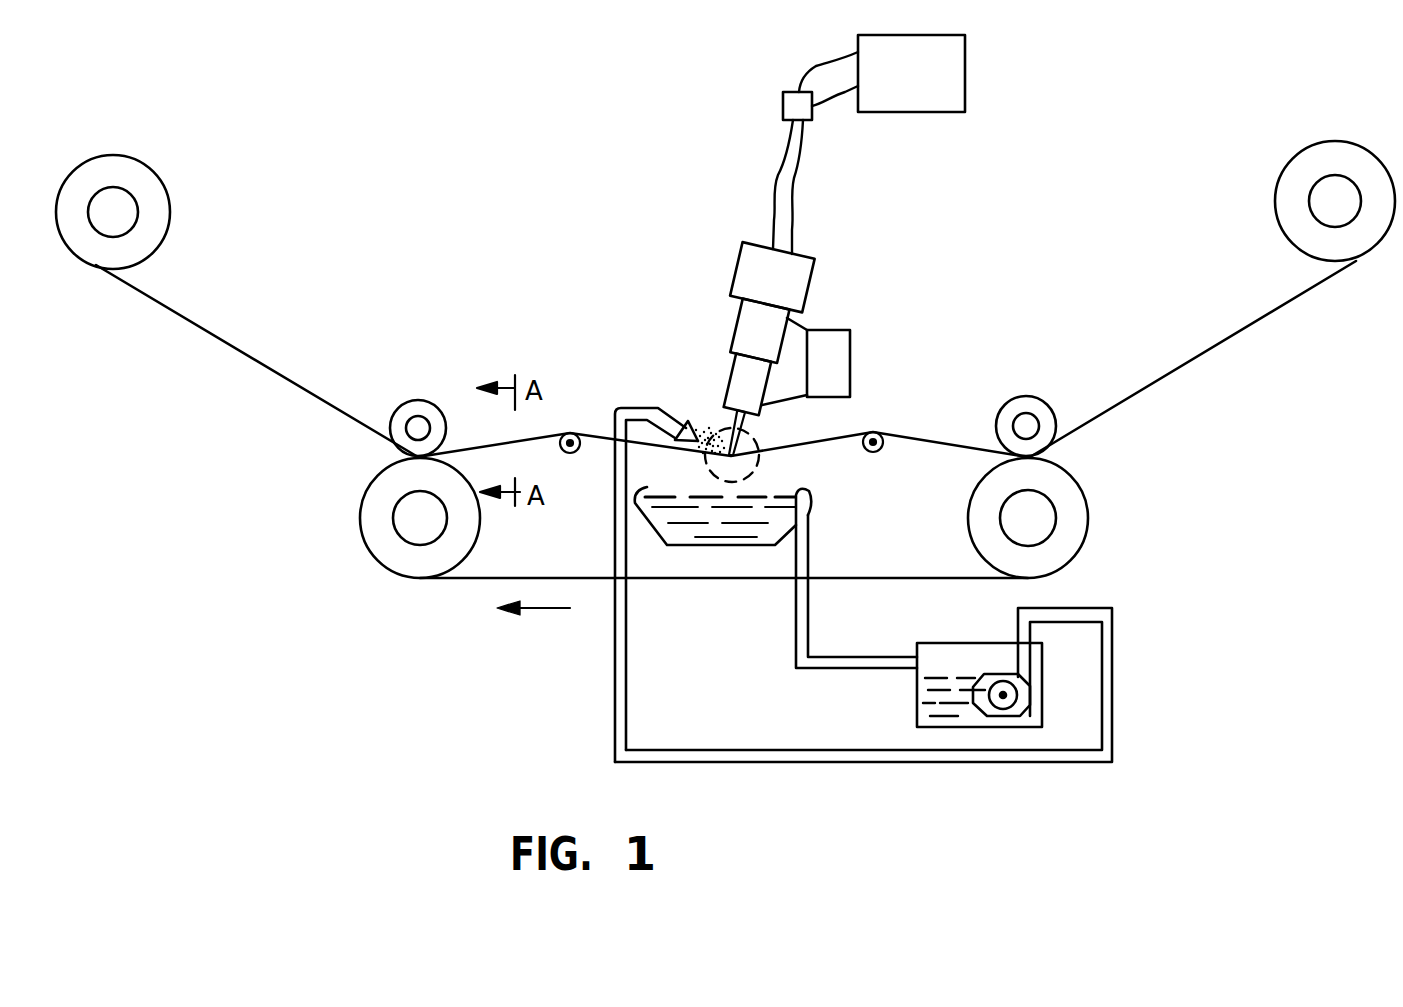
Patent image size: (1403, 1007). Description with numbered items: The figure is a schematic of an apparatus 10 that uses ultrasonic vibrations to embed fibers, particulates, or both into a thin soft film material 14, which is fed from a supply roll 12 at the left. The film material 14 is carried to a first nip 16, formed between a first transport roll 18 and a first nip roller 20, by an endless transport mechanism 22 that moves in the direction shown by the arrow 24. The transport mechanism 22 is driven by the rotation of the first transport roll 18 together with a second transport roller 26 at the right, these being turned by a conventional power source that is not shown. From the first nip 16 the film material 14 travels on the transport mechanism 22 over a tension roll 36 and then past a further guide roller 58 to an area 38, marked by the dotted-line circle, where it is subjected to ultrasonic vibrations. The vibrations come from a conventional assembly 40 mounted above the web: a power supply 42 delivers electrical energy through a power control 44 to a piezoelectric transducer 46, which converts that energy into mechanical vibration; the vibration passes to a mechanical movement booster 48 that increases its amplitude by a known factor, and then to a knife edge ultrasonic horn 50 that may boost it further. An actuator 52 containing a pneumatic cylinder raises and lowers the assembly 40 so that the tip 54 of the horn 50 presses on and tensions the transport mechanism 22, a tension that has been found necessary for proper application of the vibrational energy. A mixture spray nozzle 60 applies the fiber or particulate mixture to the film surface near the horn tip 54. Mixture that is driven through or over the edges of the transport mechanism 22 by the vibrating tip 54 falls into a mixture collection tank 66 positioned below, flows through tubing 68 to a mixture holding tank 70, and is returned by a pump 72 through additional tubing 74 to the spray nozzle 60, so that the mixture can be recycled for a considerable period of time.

The apparatus 10 is at (464, 170).
The supply roll 12 is at (162, 178).
The thin soft film material 14 is at (197, 327).
The first nip 16 is at (382, 454).
The first transport roll 18 is at (368, 522).
The first nip roller 20 is at (421, 400).
The endless transport mechanism 22 is at (487, 578).
The arrow 24 is at (556, 612).
The second transport roller 26 is at (1089, 505).
The tension roll 36 is at (571, 432).
The area 38 is at (770, 465).
The assembly 40 is at (858, 257).
The power supply 42 is at (965, 66).
The power control 44 is at (783, 106).
The piezoelectric transducer 46 is at (808, 247).
The mechanical movement booster 48 is at (740, 320).
The knife edge ultrasonic horn 50 is at (732, 367).
The actuator 52 is at (850, 340).
The tip 54 is at (715, 440).
The guide roller 58 is at (876, 435).
The mixture spray nozzle 60 is at (683, 421).
The mixture collection tank 66 is at (717, 548).
The tubing 68 is at (810, 614).
The mixture holding tank 70 is at (933, 697).
The pump 72 is at (1023, 688).
The additional tubing 74 is at (800, 765).